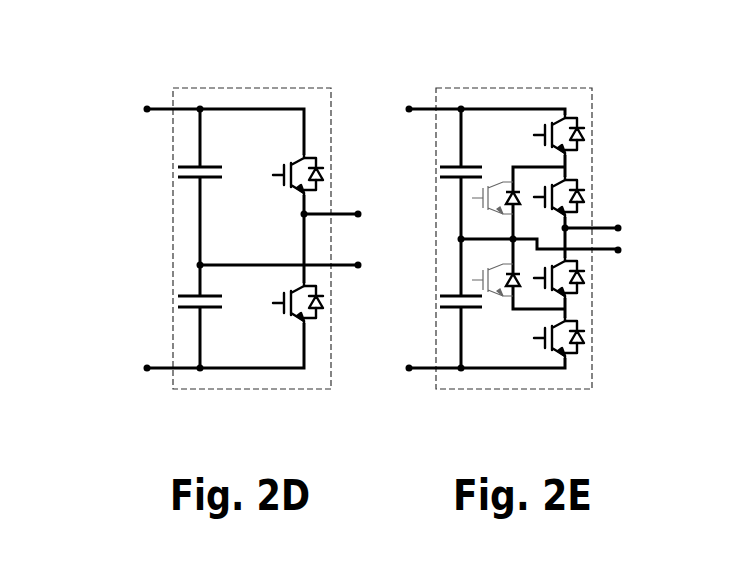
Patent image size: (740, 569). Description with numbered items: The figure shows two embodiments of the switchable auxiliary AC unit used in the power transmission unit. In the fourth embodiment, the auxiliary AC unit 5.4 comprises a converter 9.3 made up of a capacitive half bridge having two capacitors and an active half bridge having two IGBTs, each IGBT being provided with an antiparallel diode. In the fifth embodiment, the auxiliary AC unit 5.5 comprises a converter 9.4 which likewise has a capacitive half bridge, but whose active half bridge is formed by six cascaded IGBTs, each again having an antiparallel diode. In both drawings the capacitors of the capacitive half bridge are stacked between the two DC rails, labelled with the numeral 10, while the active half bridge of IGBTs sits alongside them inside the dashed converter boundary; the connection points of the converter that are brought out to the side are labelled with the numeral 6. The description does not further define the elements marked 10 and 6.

In FIG. 2D, the switchable auxiliary AC unit 5.4 is at (155, 78).
In FIG. 2E, the switchable auxiliary AC unit 5.5 is at (573, 80).
In FIG. 2D, the converter 9.3 is at (248, 87).
In FIG. 2E, the converter 9.4 is at (508, 87).
In FIG. 2D, the energy storage capacitor (DC link capacitor) 10 is at (160, 241).
In FIG. 2E, the energy storage capacitor (DC link capacitor) 10 is at (423, 270).
In FIG. 2D, the submodule terminals / output connections 6 is at (353, 238).
In FIG. 2E, the submodule terminals / output connections 6 is at (627, 238).